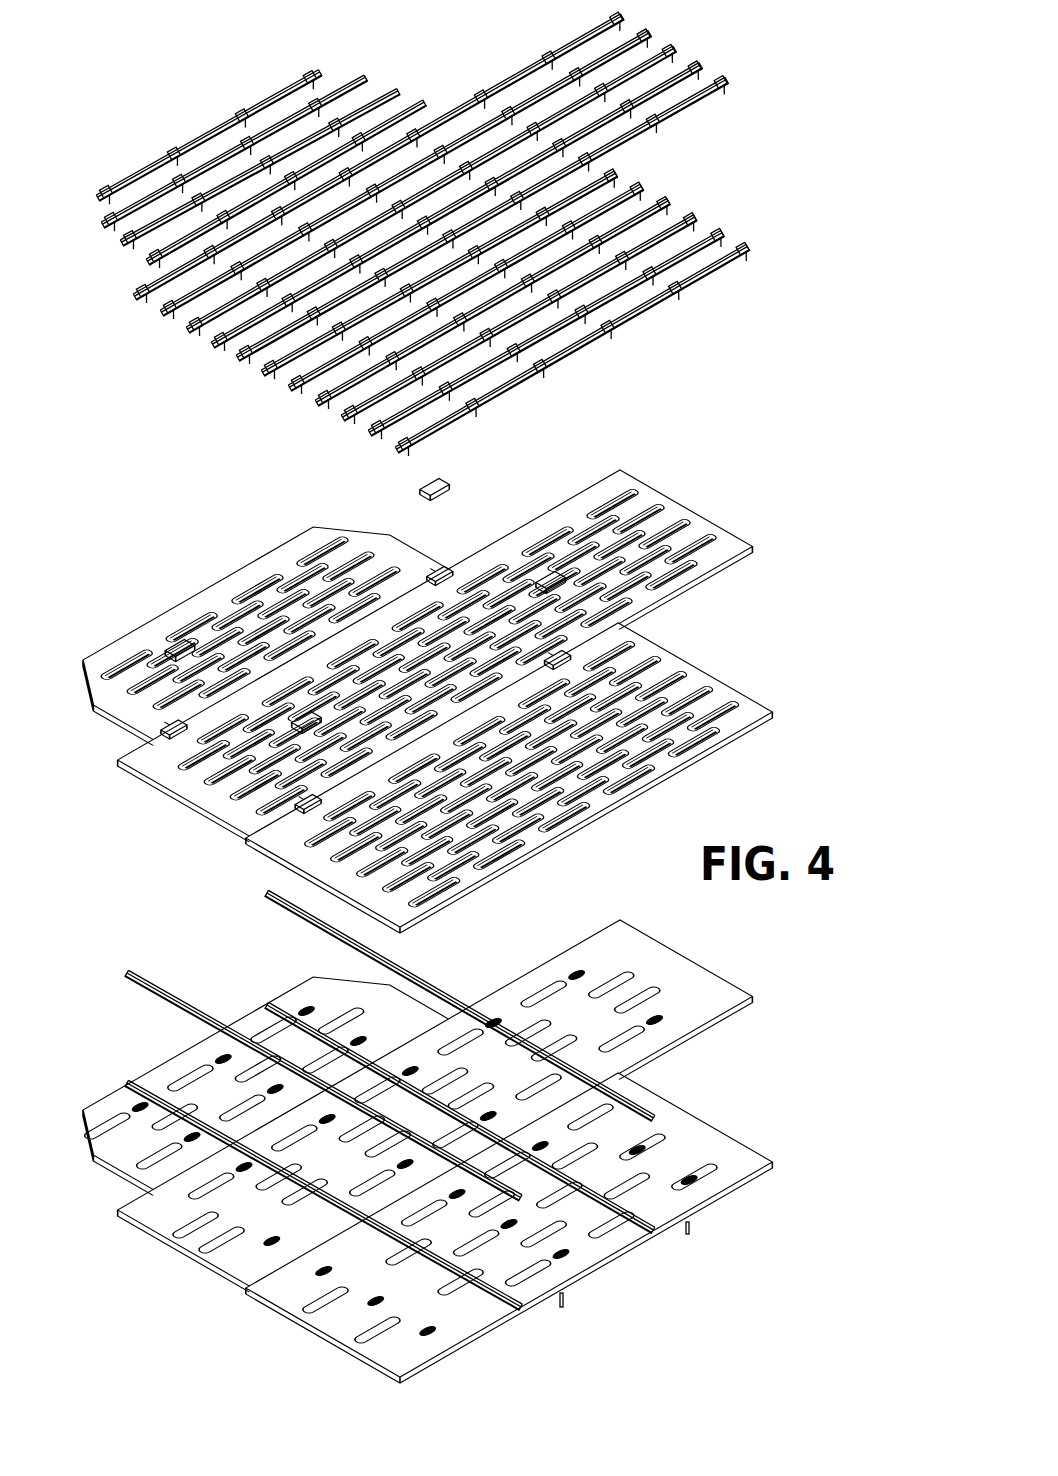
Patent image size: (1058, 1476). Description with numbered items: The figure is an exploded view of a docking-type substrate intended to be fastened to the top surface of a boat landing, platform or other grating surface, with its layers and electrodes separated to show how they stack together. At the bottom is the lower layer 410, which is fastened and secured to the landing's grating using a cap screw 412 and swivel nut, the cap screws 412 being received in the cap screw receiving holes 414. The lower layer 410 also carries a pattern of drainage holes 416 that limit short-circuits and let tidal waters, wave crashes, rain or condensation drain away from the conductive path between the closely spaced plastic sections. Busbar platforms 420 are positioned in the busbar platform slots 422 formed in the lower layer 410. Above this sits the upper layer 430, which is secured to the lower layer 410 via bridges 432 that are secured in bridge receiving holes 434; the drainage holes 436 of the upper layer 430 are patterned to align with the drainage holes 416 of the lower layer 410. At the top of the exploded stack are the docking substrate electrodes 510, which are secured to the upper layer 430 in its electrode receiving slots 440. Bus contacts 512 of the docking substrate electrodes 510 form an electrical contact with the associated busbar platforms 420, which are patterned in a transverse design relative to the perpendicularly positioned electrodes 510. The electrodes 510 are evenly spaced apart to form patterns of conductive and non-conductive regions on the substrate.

The lower layer 410 is at (245, 1002).
The cap screw 412 is at (691, 1226).
The cap screw receiving holes 414 is at (587, 966).
The drainage holes 416 is at (710, 985).
The busbar platforms 420 is at (264, 896).
The busbar platform slots 422 is at (655, 1238).
The upper layer 430 is at (215, 554).
The bridges 432 is at (416, 491).
The bridge receiving holes 434 is at (434, 572).
The drainage holes 436 is at (634, 490).
The electrode receiving slots 440 is at (648, 497).
The docking substrate electrodes 510 is at (254, 88).
The bus contacts 512 is at (142, 303).